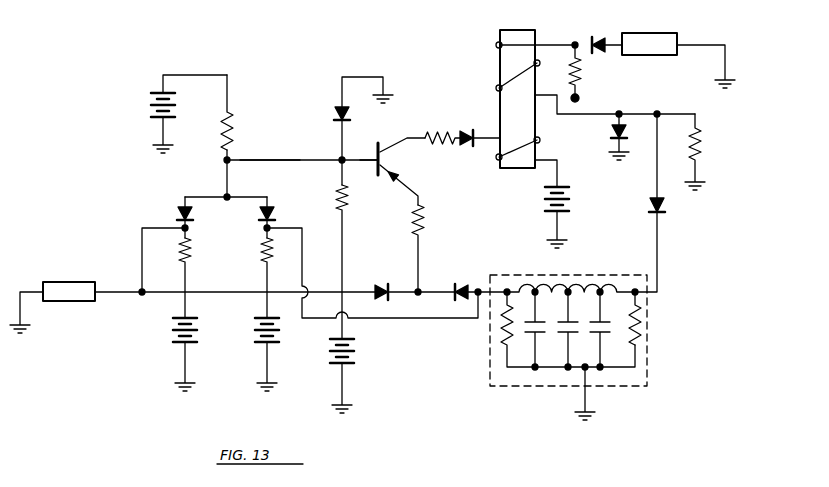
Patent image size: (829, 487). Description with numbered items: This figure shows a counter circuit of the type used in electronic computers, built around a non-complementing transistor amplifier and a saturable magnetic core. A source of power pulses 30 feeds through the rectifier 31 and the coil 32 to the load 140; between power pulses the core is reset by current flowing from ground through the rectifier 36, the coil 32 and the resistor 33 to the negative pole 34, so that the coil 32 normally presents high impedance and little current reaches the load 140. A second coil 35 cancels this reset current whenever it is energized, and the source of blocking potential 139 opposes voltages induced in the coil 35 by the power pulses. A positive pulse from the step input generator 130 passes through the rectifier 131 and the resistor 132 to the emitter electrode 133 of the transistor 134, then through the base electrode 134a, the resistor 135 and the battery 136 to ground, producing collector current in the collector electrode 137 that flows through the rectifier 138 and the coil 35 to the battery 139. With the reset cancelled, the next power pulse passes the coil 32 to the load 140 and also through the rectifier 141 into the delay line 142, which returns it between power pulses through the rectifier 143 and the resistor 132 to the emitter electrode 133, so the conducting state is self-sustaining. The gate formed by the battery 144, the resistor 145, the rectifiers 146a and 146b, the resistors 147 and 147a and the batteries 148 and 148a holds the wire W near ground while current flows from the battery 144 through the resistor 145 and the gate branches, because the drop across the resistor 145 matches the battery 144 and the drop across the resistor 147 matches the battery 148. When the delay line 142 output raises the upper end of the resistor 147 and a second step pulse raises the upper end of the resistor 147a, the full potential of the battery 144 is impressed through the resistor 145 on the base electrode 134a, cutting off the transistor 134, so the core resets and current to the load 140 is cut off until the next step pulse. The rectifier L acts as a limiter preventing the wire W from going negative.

The source of power pulses 30 is at (672, 18).
The rectifier 31 is at (598, 38).
The coil 32 is at (496, 88).
The resistor 33 is at (582, 74).
The negative pole 34 is at (581, 97).
The coil 35 is at (541, 143).
The rectifier 36 is at (615, 136).
The step input generator 130 is at (88, 300).
The rectifier 131 is at (384, 284).
The resistor 132 is at (425, 215).
The emitter electrode 133 is at (400, 183).
The transistor 134 is at (398, 157).
The base electrode 134a is at (362, 158).
The resistor 135 is at (349, 196).
The battery 136 is at (357, 350).
The collector electrode 137 is at (416, 142).
The rectifier 138 is at (462, 147).
The source of blocking potential 139 is at (570, 203).
The load 140 is at (700, 138).
The rectifier 141 is at (662, 214).
The delay line 142 is at (615, 354).
The rectifier 143 is at (460, 284).
The battery 144 is at (150, 100).
The resistor 145 is at (233, 128).
The rectifier 146a is at (182, 217).
The rectifier 146b is at (272, 216).
The resistor 147 is at (262, 231).
The resistor 147a is at (190, 252).
The battery 148 is at (277, 333).
The battery 148a is at (176, 331).
The rectifier L is at (336, 112).
The wire W is at (268, 158).